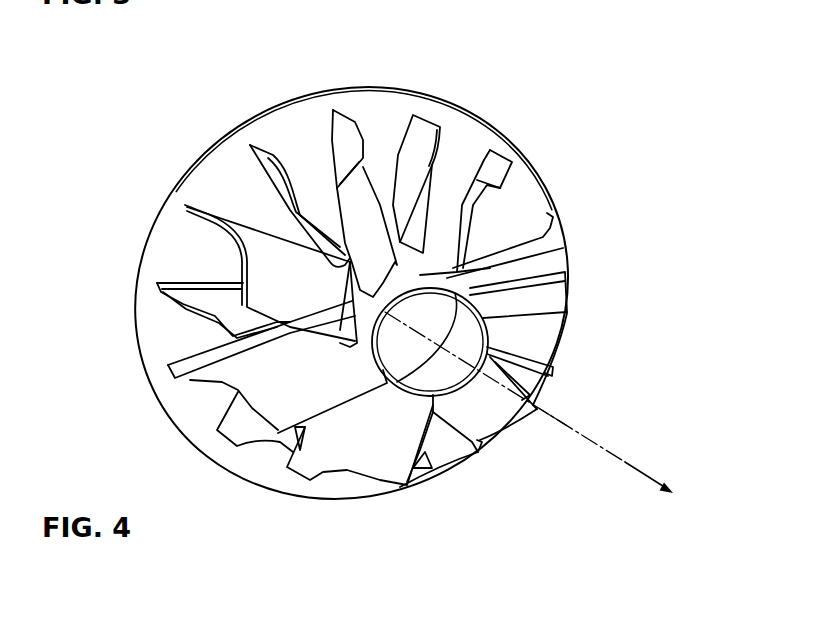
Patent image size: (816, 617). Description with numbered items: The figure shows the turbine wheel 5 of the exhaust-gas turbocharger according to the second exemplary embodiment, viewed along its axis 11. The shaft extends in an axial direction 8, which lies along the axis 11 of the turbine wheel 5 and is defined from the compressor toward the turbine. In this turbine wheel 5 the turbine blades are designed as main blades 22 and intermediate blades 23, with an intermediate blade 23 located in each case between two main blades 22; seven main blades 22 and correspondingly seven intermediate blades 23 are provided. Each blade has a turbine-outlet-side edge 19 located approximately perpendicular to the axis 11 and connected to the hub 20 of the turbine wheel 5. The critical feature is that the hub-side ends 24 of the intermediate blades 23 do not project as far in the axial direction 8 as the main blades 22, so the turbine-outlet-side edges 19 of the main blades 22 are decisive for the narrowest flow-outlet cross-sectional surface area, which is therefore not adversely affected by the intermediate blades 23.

The turbine wheel 5 is at (580, 60).
The axial direction 8 is at (652, 477).
The axis 11 is at (566, 427).
The turbine-outlet-side edge 19 is at (326, 180).
The hub 20 is at (487, 337).
The main blade 22 is at (493, 168).
The intermediate blade 23 is at (413, 138).
The hub-side end 24 is at (346, 278).